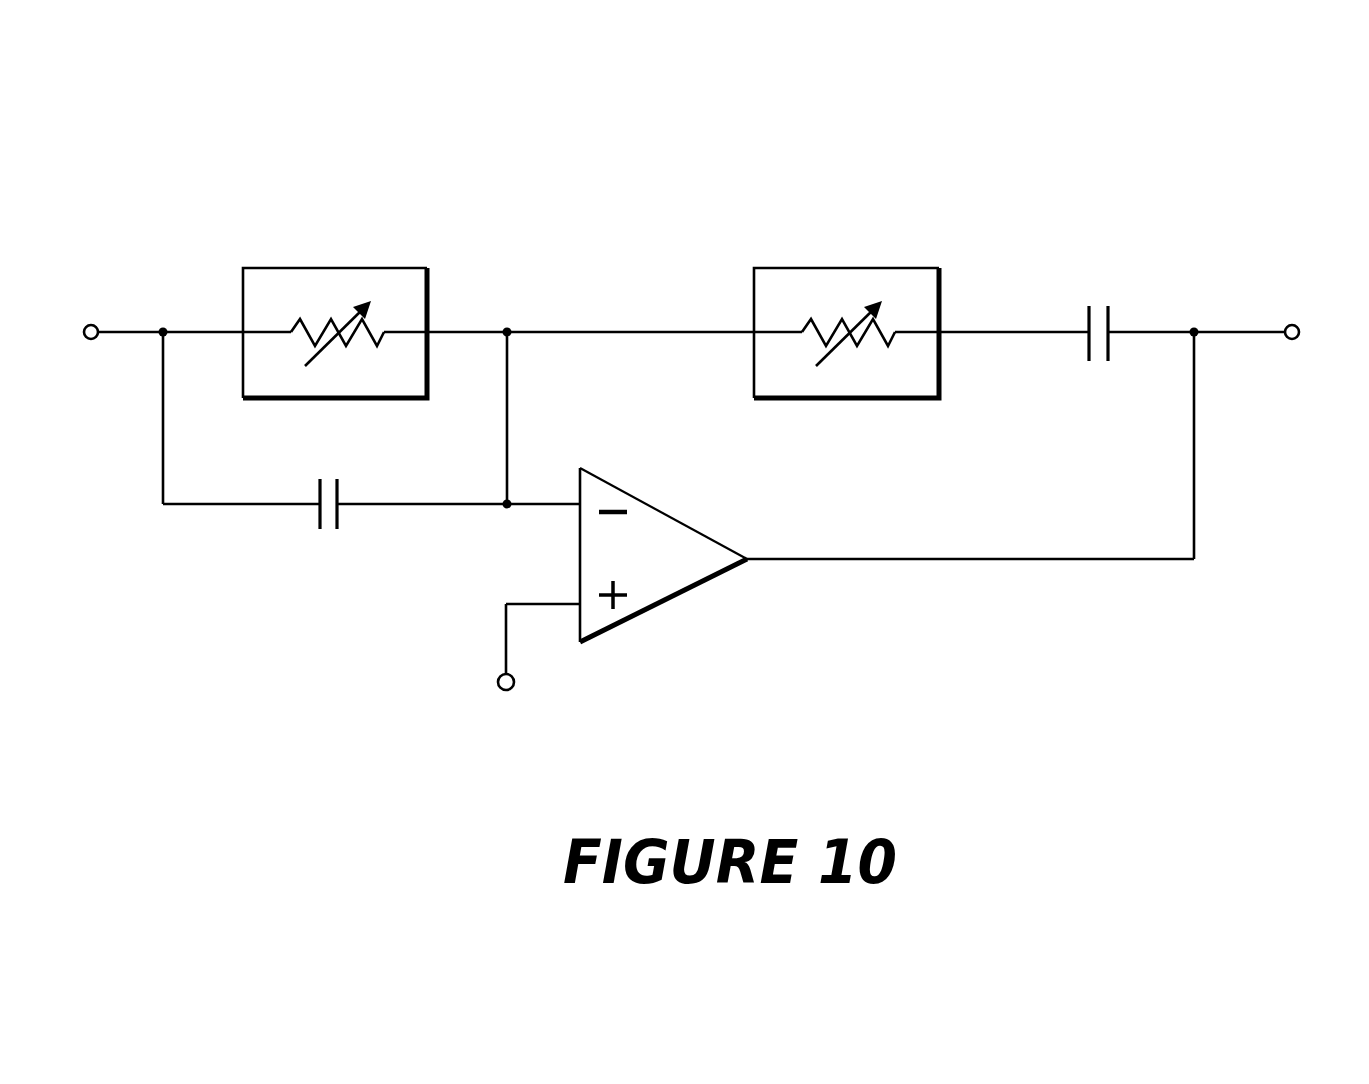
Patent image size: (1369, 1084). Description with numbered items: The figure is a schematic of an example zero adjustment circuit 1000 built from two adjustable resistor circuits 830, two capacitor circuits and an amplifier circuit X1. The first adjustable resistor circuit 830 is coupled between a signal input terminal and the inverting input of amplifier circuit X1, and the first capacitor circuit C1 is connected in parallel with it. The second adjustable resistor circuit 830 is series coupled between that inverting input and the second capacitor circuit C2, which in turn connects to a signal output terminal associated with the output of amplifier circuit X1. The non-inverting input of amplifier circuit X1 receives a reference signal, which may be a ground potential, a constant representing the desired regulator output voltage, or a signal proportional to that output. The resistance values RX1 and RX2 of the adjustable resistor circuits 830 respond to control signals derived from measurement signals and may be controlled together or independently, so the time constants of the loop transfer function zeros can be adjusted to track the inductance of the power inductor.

The zero adjustment circuit 1000 is at (1265, 159).
The adjustable resistor circuit 830 is at (243, 283).
The resistance value RX1 is at (335, 300).
The resistance value RX2 is at (846, 300).
The first capacitor circuit C1 is at (330, 534).
The second capacitor circuit C2 is at (1101, 302).
The amplifier circuit X1 is at (663, 555).